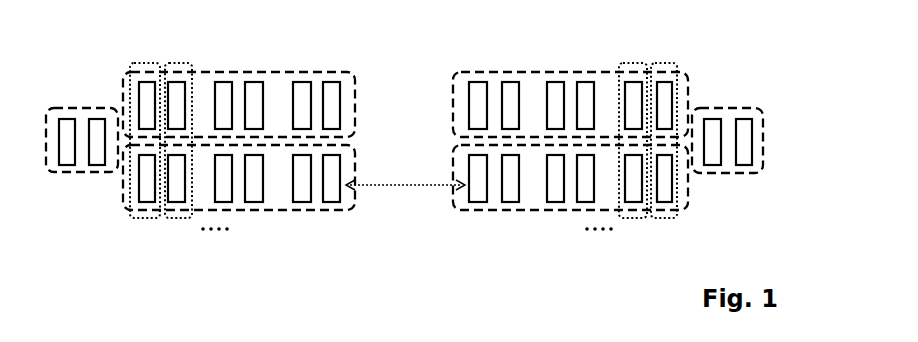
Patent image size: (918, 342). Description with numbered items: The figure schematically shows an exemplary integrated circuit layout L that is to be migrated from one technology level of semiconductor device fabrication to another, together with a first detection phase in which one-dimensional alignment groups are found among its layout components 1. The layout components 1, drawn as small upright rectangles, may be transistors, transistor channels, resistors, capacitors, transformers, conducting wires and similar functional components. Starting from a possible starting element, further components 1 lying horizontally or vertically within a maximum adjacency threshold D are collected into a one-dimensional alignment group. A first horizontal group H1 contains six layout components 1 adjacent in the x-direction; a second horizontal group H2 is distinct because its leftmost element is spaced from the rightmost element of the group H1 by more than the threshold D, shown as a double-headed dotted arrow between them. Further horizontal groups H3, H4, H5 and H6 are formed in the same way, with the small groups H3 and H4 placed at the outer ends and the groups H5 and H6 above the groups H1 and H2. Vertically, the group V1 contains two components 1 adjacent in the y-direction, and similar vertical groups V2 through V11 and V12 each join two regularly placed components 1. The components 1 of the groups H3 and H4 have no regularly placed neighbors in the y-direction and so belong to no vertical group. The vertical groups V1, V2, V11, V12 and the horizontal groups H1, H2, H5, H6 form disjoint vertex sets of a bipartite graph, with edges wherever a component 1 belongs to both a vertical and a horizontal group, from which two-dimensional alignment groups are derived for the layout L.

The layout component 1 is at (70, 119).
The first horizontal group of alignment H1 is at (297, 210).
The second horizontal group of alignment H2 is at (503, 210).
The horizontal first group H3 is at (70, 172).
The horizontal first group H4 is at (745, 173).
The horizontal first group H5 is at (357, 95).
The horizontal first group H6 is at (452, 120).
The first vertical group of alignment V1 is at (140, 218).
The vertical first group of alignment V2 is at (178, 218).
The vertical first group of alignment V11 is at (628, 218).
The vertical first group of alignment V12 is at (664, 218).
The maximum adjacency threshold D is at (393, 187).
The integrated circuit layout L is at (719, 55).